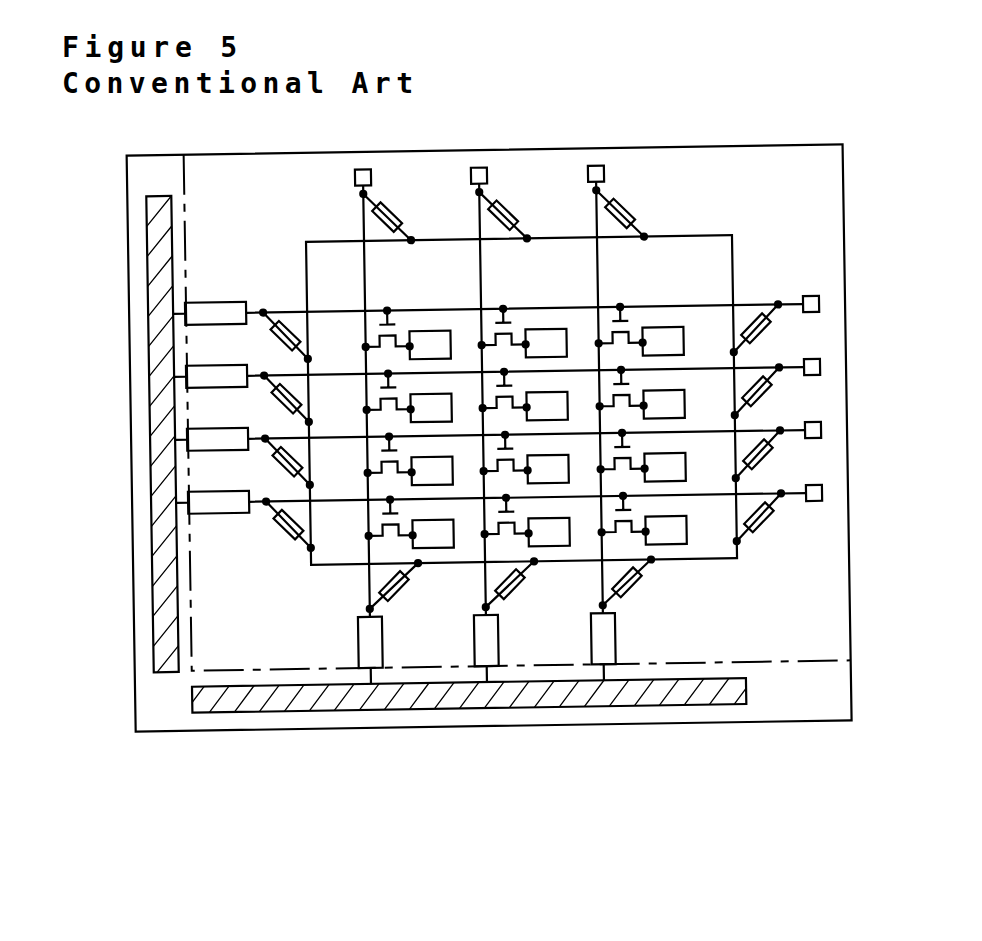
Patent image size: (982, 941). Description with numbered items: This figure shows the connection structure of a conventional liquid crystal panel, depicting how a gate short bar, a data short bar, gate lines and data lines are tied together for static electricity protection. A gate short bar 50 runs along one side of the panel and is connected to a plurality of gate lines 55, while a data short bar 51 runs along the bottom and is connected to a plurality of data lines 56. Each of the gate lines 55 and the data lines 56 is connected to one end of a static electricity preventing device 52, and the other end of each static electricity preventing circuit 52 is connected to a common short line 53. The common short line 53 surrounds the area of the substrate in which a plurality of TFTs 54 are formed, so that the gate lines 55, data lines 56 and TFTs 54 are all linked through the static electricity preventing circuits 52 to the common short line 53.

The gate short bar 50 is at (151, 348).
The data short bar 51 is at (416, 708).
The static electricity preventing device 52 is at (623, 207).
The common short line 53 is at (326, 562).
The TFT 54 is at (629, 327).
The gate line 55 is at (715, 308).
The data line 56 is at (601, 575).